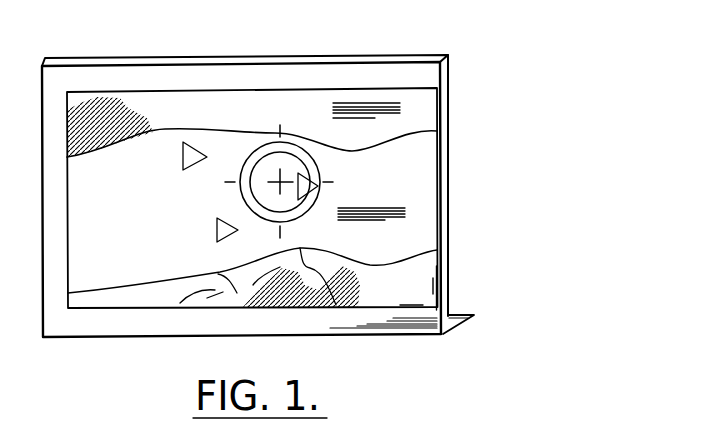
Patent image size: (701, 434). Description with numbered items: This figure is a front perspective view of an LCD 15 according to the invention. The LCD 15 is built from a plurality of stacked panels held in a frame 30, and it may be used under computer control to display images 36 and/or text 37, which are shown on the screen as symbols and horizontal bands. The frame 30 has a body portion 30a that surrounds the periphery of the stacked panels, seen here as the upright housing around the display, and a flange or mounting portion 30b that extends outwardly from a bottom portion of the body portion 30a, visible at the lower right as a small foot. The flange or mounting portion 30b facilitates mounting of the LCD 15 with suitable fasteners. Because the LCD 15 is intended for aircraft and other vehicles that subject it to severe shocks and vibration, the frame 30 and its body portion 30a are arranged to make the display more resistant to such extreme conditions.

The LCD 15 is at (312, 194).
The frame 30 is at (447, 155).
The body portion 30a is at (448, 223).
The flange or mounting portion 30b is at (461, 310).
The images 36 is at (299, 195).
The text 37 is at (360, 100).